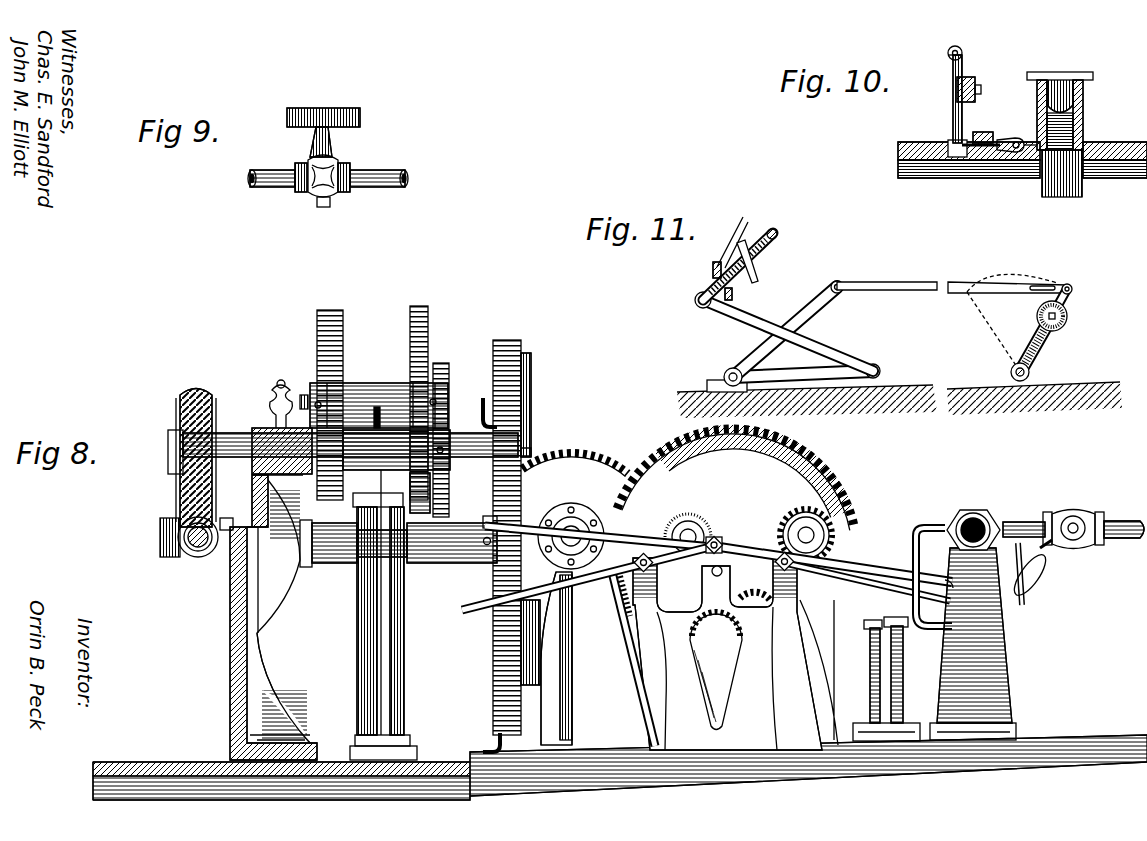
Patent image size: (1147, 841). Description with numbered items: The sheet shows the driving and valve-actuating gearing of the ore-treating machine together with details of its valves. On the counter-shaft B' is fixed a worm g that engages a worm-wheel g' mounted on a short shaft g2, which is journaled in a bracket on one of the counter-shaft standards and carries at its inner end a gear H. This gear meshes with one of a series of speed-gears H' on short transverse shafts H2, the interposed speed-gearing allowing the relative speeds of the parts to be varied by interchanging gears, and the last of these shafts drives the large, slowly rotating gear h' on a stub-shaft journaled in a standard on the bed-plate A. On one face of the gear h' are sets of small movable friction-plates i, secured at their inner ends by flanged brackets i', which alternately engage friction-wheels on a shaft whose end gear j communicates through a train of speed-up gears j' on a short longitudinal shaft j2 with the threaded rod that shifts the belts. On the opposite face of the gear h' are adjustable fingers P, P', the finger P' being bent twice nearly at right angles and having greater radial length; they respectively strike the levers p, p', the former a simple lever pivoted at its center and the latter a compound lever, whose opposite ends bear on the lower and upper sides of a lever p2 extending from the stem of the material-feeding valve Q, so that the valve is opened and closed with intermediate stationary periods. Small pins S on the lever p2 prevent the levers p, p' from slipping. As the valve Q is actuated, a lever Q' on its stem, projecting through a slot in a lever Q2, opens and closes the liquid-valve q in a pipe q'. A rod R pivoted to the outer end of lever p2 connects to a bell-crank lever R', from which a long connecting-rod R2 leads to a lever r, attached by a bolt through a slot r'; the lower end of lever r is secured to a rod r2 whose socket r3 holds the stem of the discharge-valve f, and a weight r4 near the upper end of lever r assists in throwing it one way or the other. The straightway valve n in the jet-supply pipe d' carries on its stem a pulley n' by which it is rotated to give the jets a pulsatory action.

In FIG. 8, the bed plate A is at (1070, 750).
In FIG. 8, the worm g is at (195, 565).
In FIG. 8, the worm-wheel g' is at (183, 446).
In FIG. 8, the short shaft g2 is at (330, 470).
In FIG. 8, the counter-shaft B' is at (185, 553).
In FIG. 8, the gear H is at (371, 450).
In FIG. 8, the speed-gears H' is at (397, 410).
In FIG. 8, the short transverse shafts H2 is at (265, 455).
In FIG. 8, the finger P is at (398, 555).
In FIG. 8, the finger P' is at (475, 547).
In FIG. 8, the friction-plates i is at (524, 537).
In FIG. 8, the flanged brackets i' is at (540, 475).
In FIG. 8, the large gear h' is at (479, 497).
In FIG. 8, the gear j is at (730, 479).
In FIG. 8, the speed-up gears j' is at (835, 514).
In FIG. 8, the short longitudinal shaft j2 is at (595, 562).
In FIG. 8, the lever p is at (707, 570).
In FIG. 11, the lever p is at (750, 295).
In FIG. 8, the lever p' is at (678, 623).
In FIG. 11, the lever p' is at (690, 281).
In FIG. 8, the lever p2 is at (960, 600).
In FIG. 11, the lever p2 is at (760, 252).
In FIG. 8, the pins S is at (912, 570).
In FIG. 11, the pins S is at (739, 245).
In FIG. 8, the rod R is at (892, 680).
In FIG. 11, the rod R is at (774, 339).
In FIG. 8, the bell-crank lever R' is at (902, 670).
In FIG. 11, the bell-crank lever R' is at (806, 329).
In FIG. 10, the connecting-rod R2 is at (952, 50).
In FIG. 11, the connecting-rod R2 is at (906, 283).
In FIG. 8, the material-feeding valve Q is at (973, 609).
In FIG. 8, the lever Q' is at (1033, 585).
In FIG. 8, the lever Q2 is at (1050, 550).
In FIG. 8, the liquid-valve q is at (1053, 505).
In FIG. 8, the pipe q' is at (1124, 549).
In FIG. 9, the valve n is at (317, 192).
In FIG. 9, the belt wheel or pulley n' is at (336, 119).
In FIG. 9, the pipe d' is at (328, 163).
In FIG. 10, the lever r is at (942, 94).
In FIG. 11, the lever r is at (1035, 348).
In FIG. 11, the slot r' is at (1019, 308).
In FIG. 10, the rod r2 is at (993, 156).
In FIG. 10, the socket r3 is at (1015, 137).
In FIG. 10, the weight r4 is at (976, 84).
In FIG. 11, the weight r4 is at (1068, 318).
In FIG. 10, the discharge-valve f is at (1086, 120).